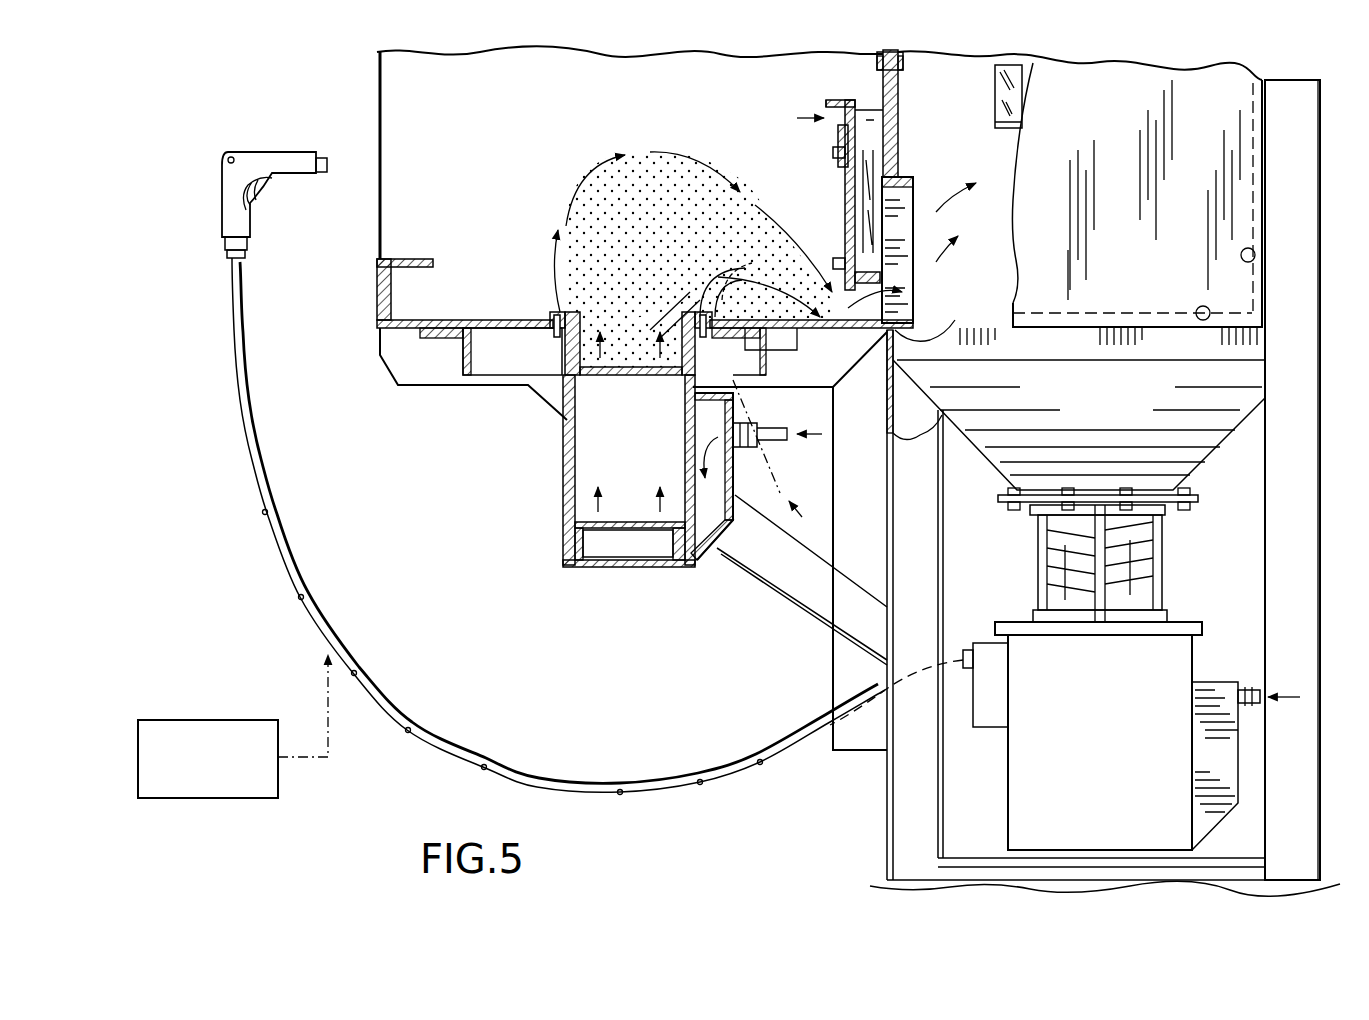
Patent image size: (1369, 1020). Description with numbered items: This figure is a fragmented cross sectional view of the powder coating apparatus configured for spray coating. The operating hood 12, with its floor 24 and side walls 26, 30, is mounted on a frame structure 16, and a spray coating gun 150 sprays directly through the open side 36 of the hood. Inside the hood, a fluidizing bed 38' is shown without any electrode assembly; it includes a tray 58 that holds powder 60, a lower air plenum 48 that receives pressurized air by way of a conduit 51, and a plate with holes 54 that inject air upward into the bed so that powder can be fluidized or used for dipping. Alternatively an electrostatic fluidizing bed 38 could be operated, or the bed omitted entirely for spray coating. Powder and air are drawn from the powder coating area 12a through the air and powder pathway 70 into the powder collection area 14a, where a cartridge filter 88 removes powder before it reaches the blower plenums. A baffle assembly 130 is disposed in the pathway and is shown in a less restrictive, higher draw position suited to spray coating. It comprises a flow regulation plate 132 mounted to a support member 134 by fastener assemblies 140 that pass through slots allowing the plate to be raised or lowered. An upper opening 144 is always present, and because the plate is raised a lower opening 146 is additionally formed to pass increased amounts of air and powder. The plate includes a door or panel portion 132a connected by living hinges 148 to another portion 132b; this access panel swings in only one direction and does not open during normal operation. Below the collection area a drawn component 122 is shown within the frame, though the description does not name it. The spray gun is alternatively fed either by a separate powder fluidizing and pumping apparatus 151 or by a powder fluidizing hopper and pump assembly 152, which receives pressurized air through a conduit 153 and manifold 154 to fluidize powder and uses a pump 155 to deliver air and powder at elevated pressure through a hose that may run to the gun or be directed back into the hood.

The operating hood 12 is at (376, 180).
The powder coating area 12a is at (653, 128).
The powder collection area 14a is at (976, 116).
The frame structure 16 is at (1305, 236).
The floor 24 is at (445, 320).
The side wall 26 is at (448, 100).
The side wall 30 is at (705, 555).
The open side 36 is at (373, 113).
The powder fluidizing bed 38 is at (693, 259).
The fluidizing bed 38' is at (586, 471).
The lower air plenum 48 is at (583, 542).
The conduit 51 is at (772, 425).
The holes 54 is at (656, 520).
The tray 58 is at (632, 376).
The powder 60 is at (578, 330).
The air and powder pathway 70 is at (888, 202).
The cartridge filter 88 is at (1022, 95).
The sieve 122 is at (1166, 577).
The baffle assembly 130 is at (788, 112).
The flow regulation plate 132 is at (840, 100).
The door or panel portion 132a is at (847, 206).
The plate portion 132b is at (826, 104).
The support member 134 is at (868, 108).
The fastener assembly 140 is at (832, 152).
The upper opening 144 is at (898, 118).
The lower opening 146 is at (913, 300).
The living hinge 148 is at (838, 135).
The spray coating gun 150 is at (268, 168).
The powder fluidizing and pumping apparatus 151 is at (240, 720).
The powder fluidizing hopper and pump assembly 152 is at (1194, 652).
The conduit 153 is at (1255, 690).
The manifold 154 is at (1205, 743).
The pump 155 is at (990, 717).